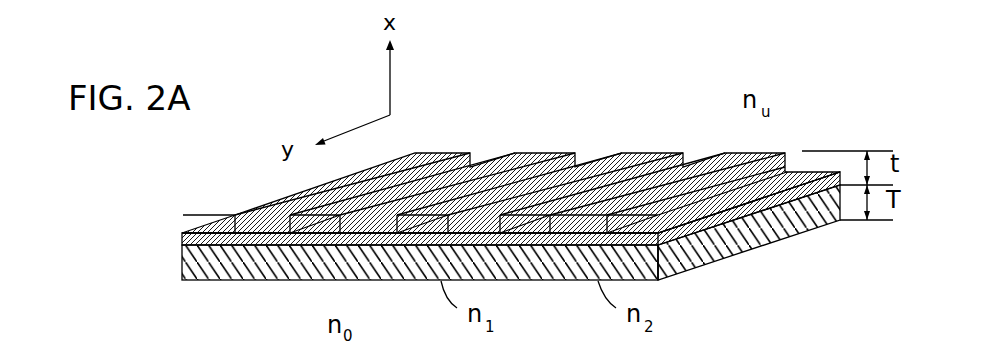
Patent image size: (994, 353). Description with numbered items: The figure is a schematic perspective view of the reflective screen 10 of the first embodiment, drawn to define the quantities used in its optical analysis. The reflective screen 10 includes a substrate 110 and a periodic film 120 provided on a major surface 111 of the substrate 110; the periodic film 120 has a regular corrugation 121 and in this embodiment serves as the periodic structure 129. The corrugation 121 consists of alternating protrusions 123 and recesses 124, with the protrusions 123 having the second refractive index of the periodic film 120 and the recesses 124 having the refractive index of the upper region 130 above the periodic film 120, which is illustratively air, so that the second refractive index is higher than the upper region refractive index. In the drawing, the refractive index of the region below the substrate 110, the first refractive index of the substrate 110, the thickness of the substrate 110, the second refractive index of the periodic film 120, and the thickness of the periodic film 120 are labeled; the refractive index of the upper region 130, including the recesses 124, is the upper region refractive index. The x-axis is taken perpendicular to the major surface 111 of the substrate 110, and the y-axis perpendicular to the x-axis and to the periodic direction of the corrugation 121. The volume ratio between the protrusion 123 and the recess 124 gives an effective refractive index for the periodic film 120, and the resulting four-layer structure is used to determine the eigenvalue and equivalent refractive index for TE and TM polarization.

The reflective screen 10 is at (829, 65).
The substrate 110 is at (207, 281).
The major surface 111 is at (217, 216).
The periodic film 120 is at (182, 232).
The periodic structure 129 is at (511, 202).
The upper region 130 is at (697, 158).
The corrugation 121 is at (472, 102).
The protrusion 123 is at (508, 162).
The recess 124 is at (582, 163).